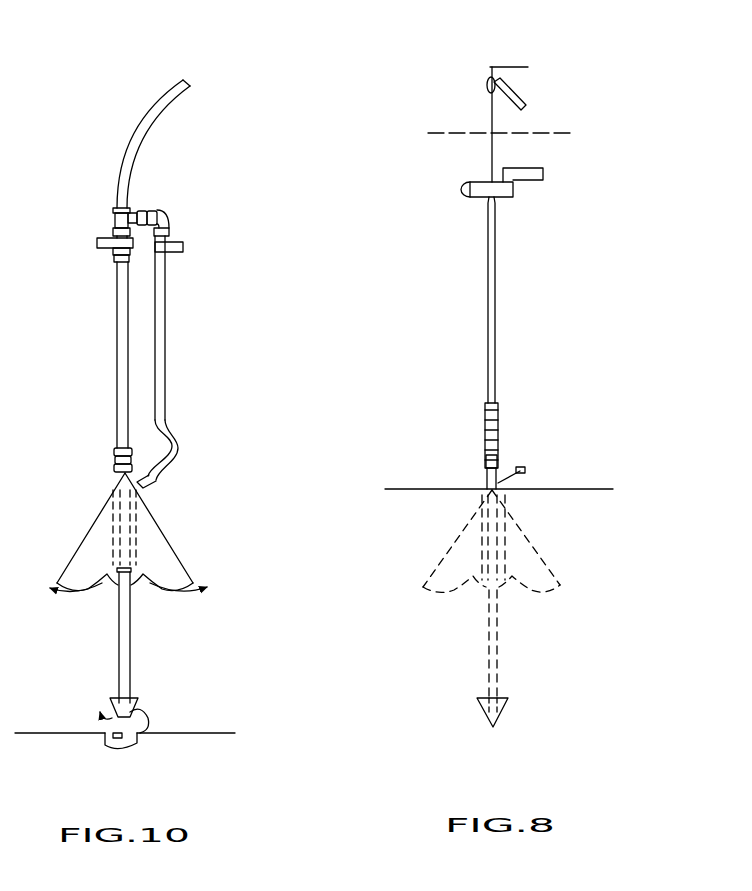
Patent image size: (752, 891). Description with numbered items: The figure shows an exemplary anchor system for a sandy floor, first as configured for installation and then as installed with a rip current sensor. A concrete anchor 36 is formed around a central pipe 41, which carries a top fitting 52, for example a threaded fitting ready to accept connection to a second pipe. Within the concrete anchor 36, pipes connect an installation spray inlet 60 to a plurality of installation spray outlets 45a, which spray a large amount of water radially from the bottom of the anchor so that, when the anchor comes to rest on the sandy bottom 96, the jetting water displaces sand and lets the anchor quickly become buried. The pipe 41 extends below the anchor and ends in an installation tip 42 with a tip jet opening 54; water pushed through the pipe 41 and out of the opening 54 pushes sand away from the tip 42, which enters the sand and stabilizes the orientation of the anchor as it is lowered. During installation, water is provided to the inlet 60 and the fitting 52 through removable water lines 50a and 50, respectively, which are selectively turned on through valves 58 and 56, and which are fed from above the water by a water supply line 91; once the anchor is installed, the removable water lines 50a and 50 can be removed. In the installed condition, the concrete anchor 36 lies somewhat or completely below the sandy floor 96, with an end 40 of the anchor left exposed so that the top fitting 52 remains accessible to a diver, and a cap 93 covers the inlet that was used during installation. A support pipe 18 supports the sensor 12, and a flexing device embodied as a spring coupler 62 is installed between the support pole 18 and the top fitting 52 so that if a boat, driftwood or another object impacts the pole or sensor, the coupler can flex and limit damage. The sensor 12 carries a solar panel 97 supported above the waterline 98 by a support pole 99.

In FIG. 10, the water supply line 91 is at (128, 192).
In FIG. 10, the valve 56 is at (110, 252).
In FIG. 10, the valve 58 is at (168, 253).
In FIG. 10, the removable water line 50 is at (118, 362).
In FIG. 10, the removable water line 50a is at (175, 440).
In FIG. 10, the installation spray inlet 60 is at (140, 481).
In FIG. 10, the top fitting 52 is at (115, 460).
In FIG. 8, the top fitting 52 is at (487, 461).
In FIG. 10, the concrete anchor 36 is at (170, 537).
In FIG. 8, the concrete anchor 36 is at (558, 580).
In FIG. 10, the installation spray outlets 45a is at (150, 585).
In FIG. 8, the installation spray outlets 45a is at (453, 582).
In FIG. 10, the central pipe 41 is at (132, 655).
In FIG. 8, the central pipe 41 is at (498, 648).
In FIG. 10, the installation tip 42 is at (130, 713).
In FIG. 8, the installation tip 42 is at (502, 710).
In FIG. 10, the tip jet opening 54 is at (143, 727).
In FIG. 10, the sandy bottom 96 is at (217, 733).
In FIG. 8, the sandy bottom 96 is at (597, 489).
In FIG. 8, the support pole 99 is at (492, 108).
In FIG. 8, the solar panel 97 is at (503, 93).
In FIG. 8, the waterline 98 is at (548, 132).
In FIG. 8, the sensor 12 is at (517, 190).
In FIG. 8, the support pipe 18 is at (497, 262).
In FIG. 8, the spring coupler 62 is at (498, 422).
In FIG. 8, the end of concrete anchor 40 is at (500, 477).
In FIG. 8, the cap 93 is at (523, 477).